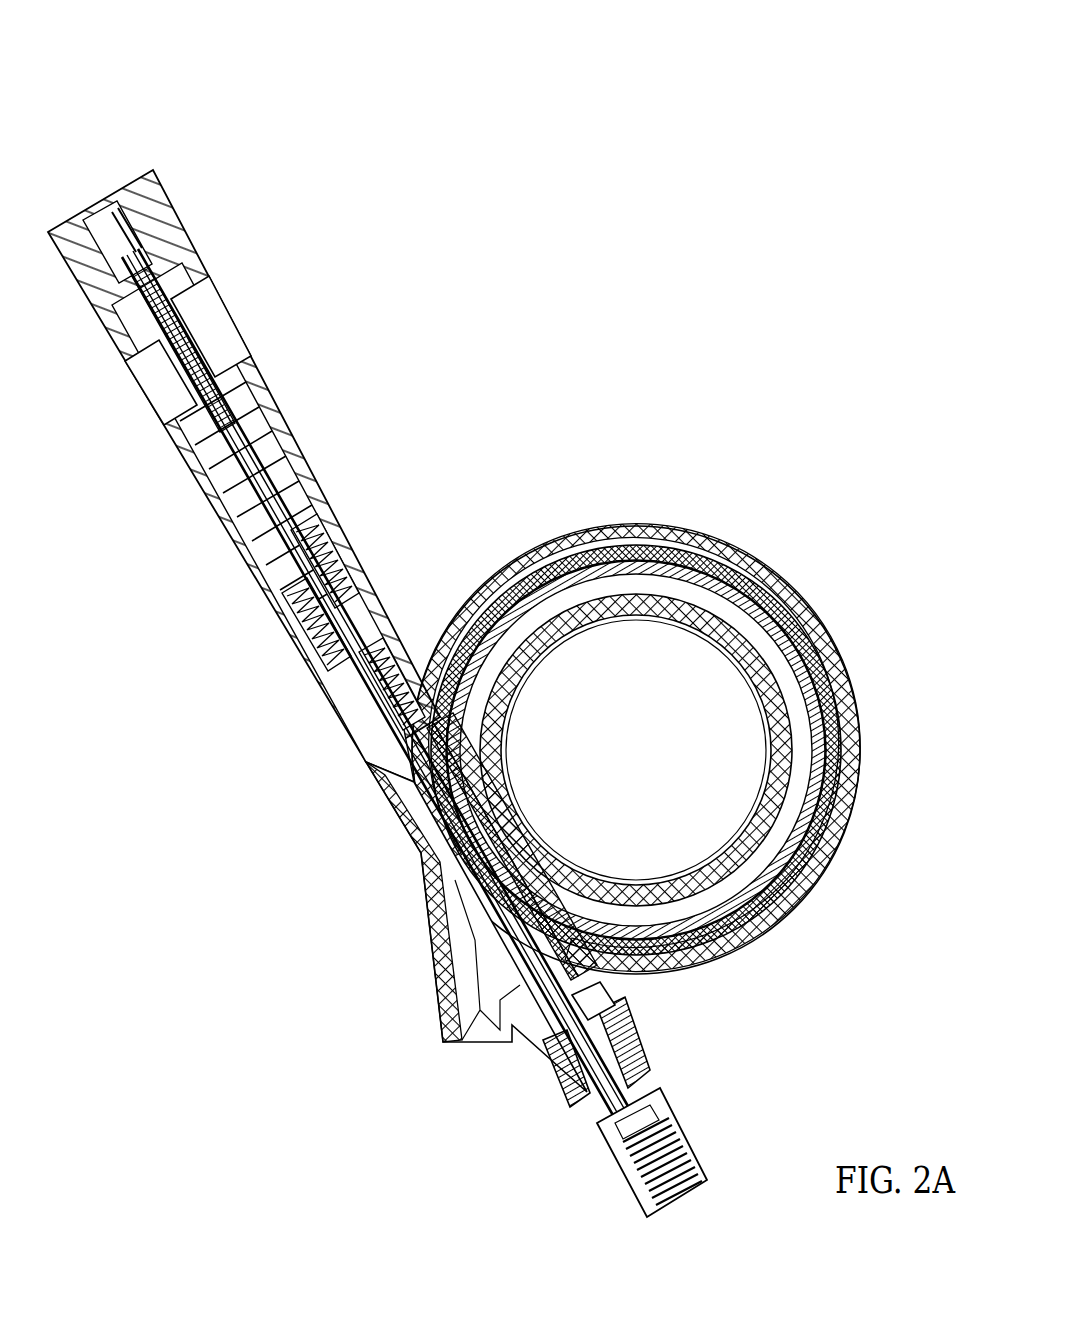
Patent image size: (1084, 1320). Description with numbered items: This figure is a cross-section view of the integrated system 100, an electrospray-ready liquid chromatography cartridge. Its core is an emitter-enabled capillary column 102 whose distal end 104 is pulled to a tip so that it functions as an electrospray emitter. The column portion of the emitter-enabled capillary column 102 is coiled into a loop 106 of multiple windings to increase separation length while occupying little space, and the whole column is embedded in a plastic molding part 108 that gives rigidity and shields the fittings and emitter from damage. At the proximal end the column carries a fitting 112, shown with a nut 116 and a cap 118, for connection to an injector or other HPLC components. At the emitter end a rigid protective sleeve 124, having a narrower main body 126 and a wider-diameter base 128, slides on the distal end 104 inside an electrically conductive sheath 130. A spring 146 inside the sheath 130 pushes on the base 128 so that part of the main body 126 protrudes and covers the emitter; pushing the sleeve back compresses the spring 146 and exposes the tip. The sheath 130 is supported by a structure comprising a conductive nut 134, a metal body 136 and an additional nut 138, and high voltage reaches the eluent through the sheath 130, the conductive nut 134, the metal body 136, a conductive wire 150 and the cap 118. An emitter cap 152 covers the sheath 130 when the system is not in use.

The integrated system 100 is at (478, 78).
The emitter-enabled capillary column 102 is at (443, 817).
The distal end 104 is at (122, 215).
The loop 106 is at (795, 885).
The molding part 108 is at (735, 545).
The fitting 112 is at (613, 988).
The nut 116 is at (560, 1080).
The cap 118 is at (612, 1160).
The protective sleeve 124 is at (140, 368).
The main body 126 is at (173, 297).
The base 128 is at (230, 350).
The electrically conductive sheath 130 is at (272, 400).
The conductive nut 134 is at (323, 530).
The metal body 136 is at (300, 642).
The additional nut 138 is at (358, 755).
The spring 146 is at (290, 450).
The conductive wire 150 is at (427, 880).
The emitter cap 152 is at (182, 255).